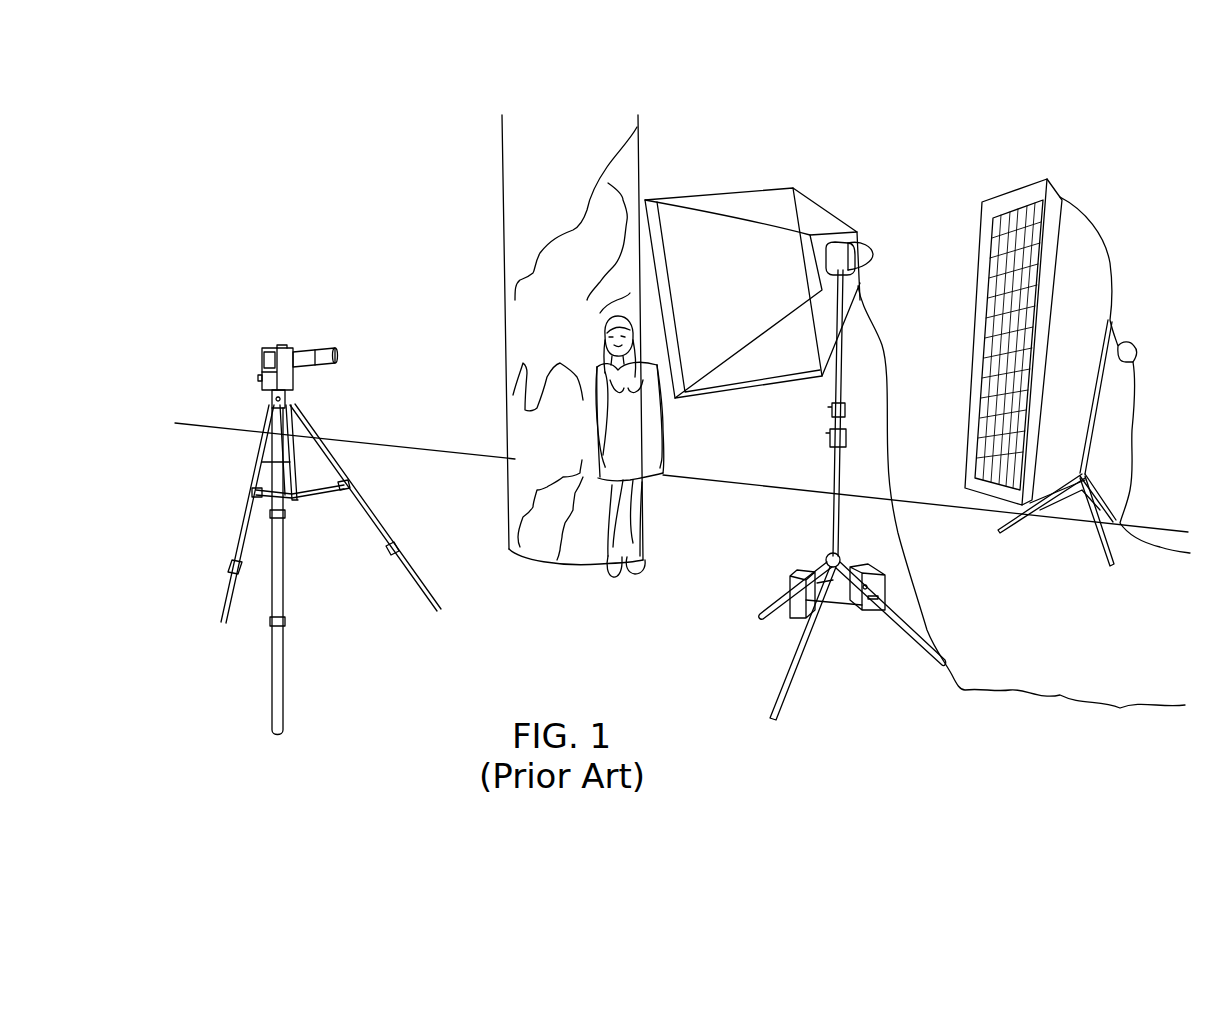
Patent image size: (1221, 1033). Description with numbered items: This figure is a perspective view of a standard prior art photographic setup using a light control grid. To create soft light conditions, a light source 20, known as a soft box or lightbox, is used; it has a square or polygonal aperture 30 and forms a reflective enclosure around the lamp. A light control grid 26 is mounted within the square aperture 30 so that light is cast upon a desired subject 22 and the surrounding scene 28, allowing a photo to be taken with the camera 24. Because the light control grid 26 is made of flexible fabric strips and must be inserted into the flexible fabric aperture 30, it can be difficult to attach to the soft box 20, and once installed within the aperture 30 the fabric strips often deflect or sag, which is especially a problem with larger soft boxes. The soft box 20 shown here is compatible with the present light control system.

The light source 20 is at (739, 190).
The subject 22 is at (667, 437).
The camera 24 is at (275, 346).
The light control grid 26 is at (1000, 284).
The scene 28 is at (428, 266).
The aperture 30 is at (1018, 205).